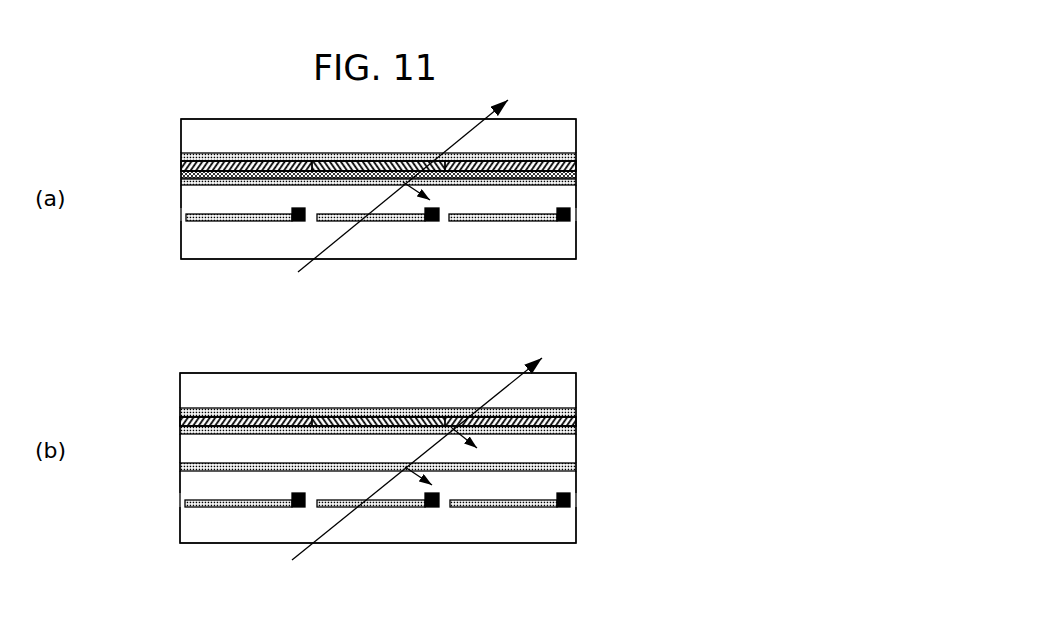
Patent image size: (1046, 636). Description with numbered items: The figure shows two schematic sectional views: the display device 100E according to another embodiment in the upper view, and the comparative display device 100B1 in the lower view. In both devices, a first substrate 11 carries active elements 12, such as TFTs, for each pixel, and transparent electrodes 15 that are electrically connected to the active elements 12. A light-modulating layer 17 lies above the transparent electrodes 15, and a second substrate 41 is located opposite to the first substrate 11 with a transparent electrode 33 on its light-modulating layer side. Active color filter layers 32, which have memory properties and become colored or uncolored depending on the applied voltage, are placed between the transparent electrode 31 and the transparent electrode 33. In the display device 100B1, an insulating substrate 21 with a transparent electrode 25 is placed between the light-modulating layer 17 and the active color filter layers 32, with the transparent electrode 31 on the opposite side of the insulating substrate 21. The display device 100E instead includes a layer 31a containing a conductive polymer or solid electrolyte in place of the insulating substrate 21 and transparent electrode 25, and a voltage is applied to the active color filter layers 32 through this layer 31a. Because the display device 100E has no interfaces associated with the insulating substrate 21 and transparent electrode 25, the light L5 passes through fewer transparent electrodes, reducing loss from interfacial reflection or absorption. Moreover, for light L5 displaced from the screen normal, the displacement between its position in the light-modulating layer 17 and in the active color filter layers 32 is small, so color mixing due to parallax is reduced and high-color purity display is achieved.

The display device 100E is at (622, 119).
The display device 100B1 is at (646, 381).
The second substrate 41 is at (183, 124).
The transparent electrode 33 is at (576, 157).
The active color filter layers 32 is at (576, 166).
The layer containing a conductive polymer 31a is at (576, 178).
The transparent electrode 31 is at (181, 181).
The transparent electrode 25 is at (180, 466).
The insulating substrate 21 is at (180, 443).
The light-modulating layer 17 is at (181, 196).
The transparent electrodes 15 is at (186, 218).
The active elements 12 is at (570, 218).
The first substrate 11 is at (181, 249).
The light L5 is at (310, 263).